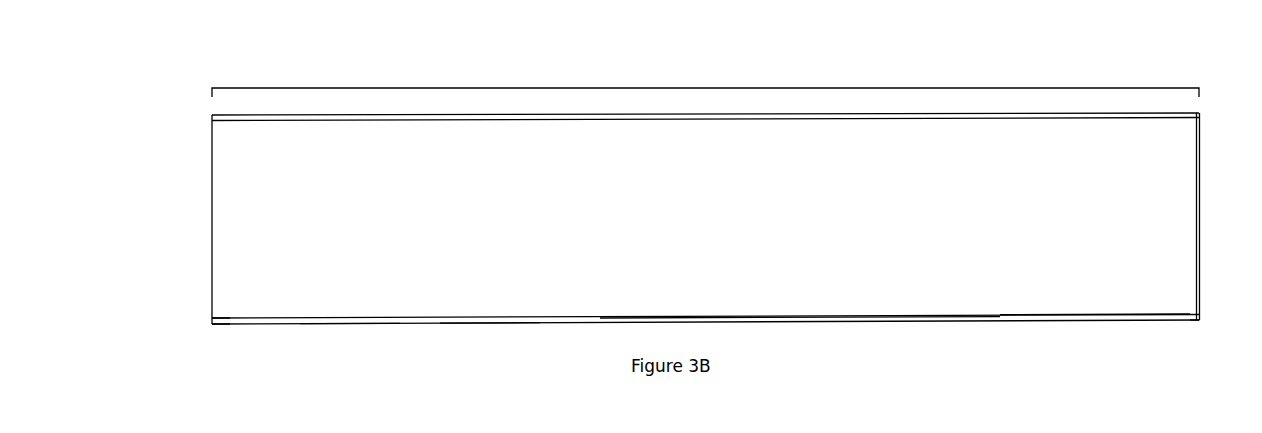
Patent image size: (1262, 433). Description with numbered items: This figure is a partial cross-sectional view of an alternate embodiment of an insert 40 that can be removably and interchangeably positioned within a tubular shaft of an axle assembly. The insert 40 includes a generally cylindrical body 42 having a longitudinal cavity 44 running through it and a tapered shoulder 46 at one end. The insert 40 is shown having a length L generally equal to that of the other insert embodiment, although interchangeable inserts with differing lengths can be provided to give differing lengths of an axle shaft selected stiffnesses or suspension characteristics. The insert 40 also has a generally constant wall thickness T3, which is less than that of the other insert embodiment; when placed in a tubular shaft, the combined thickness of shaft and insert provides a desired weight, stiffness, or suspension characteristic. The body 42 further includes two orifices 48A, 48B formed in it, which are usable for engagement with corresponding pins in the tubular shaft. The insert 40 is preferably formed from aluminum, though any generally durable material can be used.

The length L is at (705, 83).
The insert 40 is at (988, 335).
The body 42 is at (763, 322).
The longitudinal cavity 44 is at (1062, 290).
The tapered shoulder 46 is at (1199, 320).
The orifice 48A is at (347, 322).
The orifice 48B is at (488, 318).
The wall thickness T3 is at (207, 318).